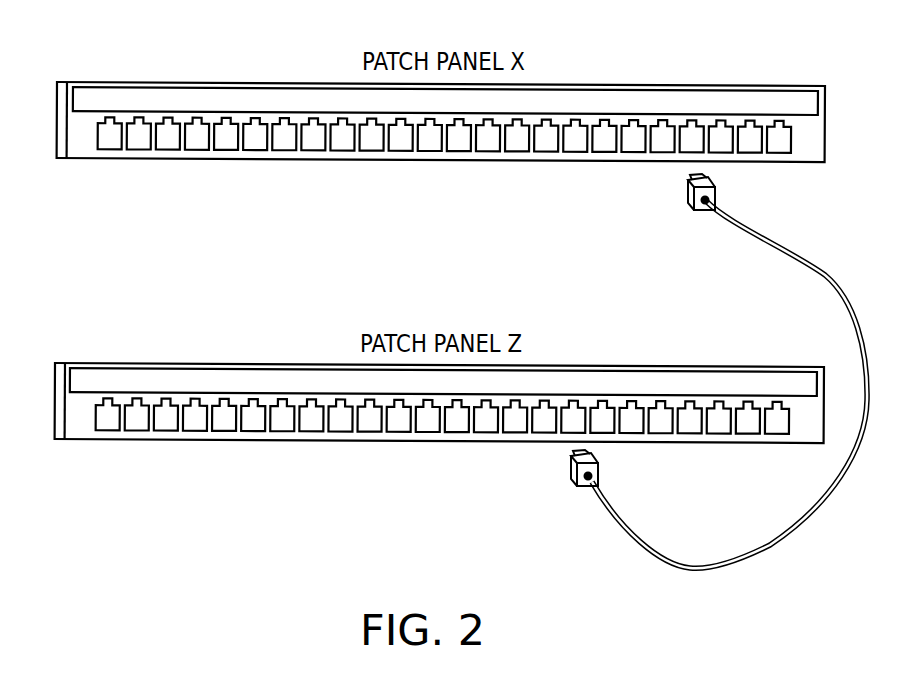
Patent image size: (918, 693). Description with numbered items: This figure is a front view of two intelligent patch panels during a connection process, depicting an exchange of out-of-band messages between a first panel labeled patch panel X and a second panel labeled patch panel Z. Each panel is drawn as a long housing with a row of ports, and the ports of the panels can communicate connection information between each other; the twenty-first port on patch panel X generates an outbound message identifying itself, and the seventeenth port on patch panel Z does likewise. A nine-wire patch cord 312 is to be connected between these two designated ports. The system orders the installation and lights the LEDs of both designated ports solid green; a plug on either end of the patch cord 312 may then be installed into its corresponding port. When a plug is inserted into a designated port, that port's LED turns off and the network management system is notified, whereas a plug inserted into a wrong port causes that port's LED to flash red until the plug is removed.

The patch cord 312 is at (766, 546).